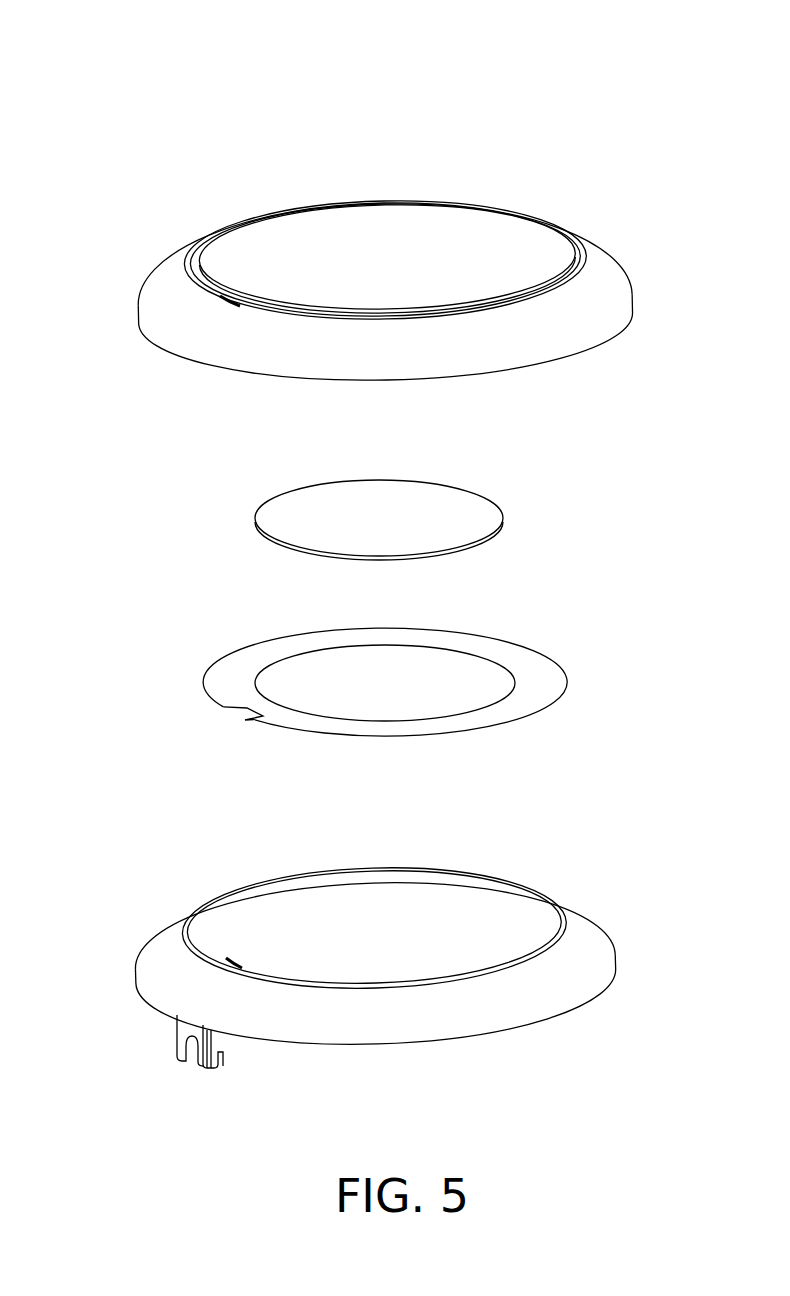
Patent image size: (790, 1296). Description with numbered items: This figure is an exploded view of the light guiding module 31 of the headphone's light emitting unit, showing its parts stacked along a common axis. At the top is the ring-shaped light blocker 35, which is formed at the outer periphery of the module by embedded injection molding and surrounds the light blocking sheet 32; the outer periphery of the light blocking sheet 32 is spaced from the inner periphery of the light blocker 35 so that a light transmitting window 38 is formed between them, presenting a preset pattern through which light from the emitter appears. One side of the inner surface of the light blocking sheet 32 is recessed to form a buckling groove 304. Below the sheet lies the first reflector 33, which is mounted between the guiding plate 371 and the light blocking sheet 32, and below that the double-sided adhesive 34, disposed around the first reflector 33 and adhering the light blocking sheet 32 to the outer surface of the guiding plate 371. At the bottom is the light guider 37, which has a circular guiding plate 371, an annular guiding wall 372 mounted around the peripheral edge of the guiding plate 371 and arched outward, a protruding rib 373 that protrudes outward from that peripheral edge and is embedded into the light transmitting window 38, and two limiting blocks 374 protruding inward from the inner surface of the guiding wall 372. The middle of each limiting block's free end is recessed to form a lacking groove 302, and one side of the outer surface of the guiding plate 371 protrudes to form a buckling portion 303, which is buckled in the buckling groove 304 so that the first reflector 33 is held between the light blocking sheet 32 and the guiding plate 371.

The light guiding module 31 is at (57, 47).
The light blocking sheet 32 is at (382, 221).
The first reflector 33 is at (372, 491).
The double-sided adhesive 34 is at (215, 675).
The light blocker 35 is at (611, 262).
The light guider 37 is at (624, 944).
The light transmitting window 38 is at (190, 266).
The lacking groove 302 is at (184, 1052).
The buckling portion 303 is at (235, 963).
The buckling groove 304 is at (228, 305).
The guiding plate 371 is at (264, 916).
The guiding wall 372 is at (146, 961).
The protruding rib 373 is at (559, 907).
The limiting block 374 is at (224, 1070).